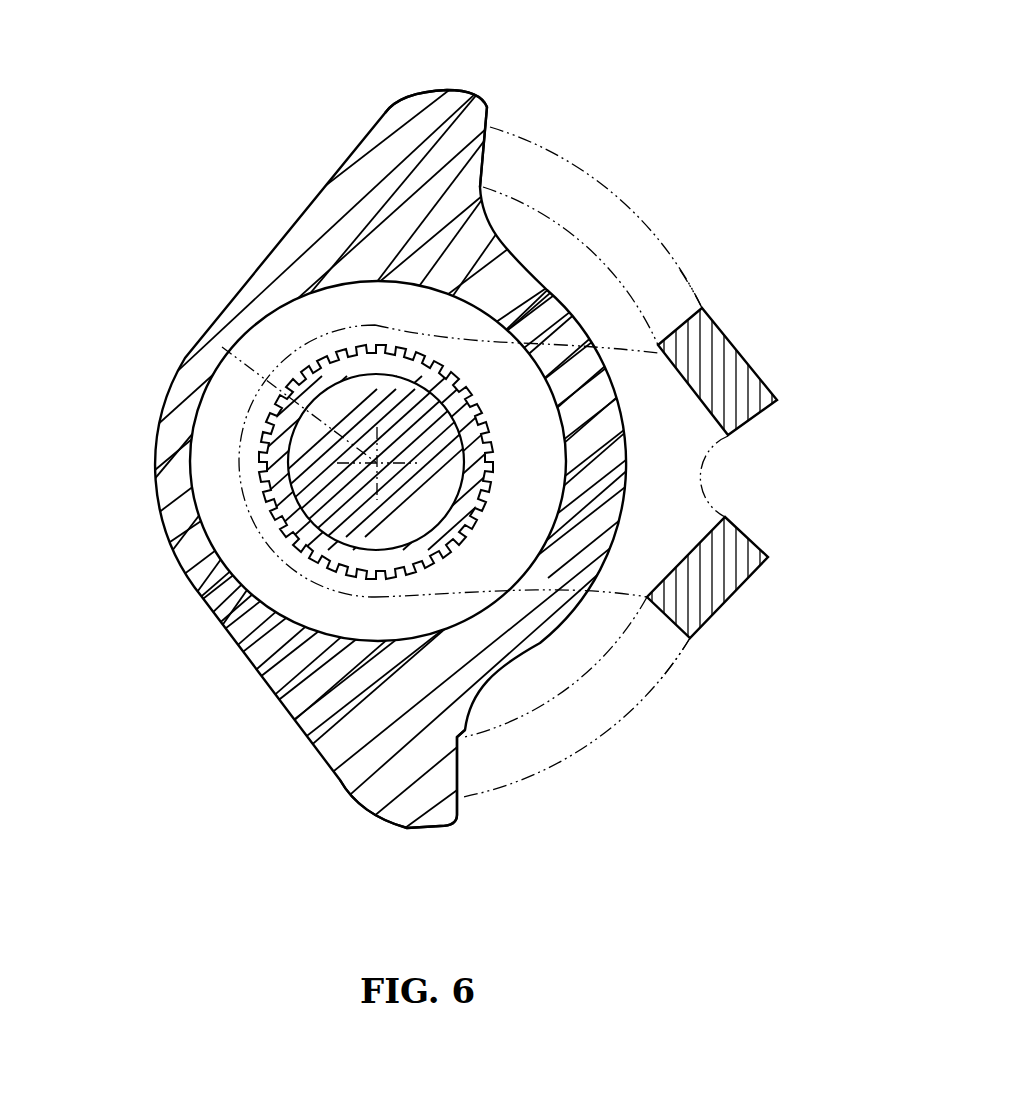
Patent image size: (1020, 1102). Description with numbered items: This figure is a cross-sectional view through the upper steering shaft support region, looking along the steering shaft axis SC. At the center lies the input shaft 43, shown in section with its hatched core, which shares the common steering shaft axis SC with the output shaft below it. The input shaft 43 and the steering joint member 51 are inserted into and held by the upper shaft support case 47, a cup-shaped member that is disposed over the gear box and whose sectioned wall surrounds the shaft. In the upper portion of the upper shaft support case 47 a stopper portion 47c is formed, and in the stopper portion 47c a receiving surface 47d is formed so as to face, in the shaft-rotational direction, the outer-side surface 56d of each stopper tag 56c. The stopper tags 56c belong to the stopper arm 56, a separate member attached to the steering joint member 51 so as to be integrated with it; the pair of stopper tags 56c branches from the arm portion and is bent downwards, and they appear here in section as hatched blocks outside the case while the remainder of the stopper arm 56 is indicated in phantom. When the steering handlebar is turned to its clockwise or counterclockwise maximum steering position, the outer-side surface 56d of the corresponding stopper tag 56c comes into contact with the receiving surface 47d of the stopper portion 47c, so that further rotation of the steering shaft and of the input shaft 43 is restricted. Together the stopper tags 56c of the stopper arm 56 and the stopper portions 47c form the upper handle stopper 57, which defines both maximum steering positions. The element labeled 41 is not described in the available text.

The support member 41 is at (510, 535).
The upper shaft support case 47 is at (250, 262).
The stopper portion 47c is at (445, 100).
The receiving surface 47d is at (488, 122).
The input shaft 43 is at (312, 453).
The steering shaft axis SC is at (222, 347).
The steering joint member 51 is at (445, 320).
The stopper arm 56 is at (625, 345).
The stopper tag 56c is at (730, 362).
The outer-side surface 56d is at (700, 308).
The upper handle stopper 57 is at (687, 551).